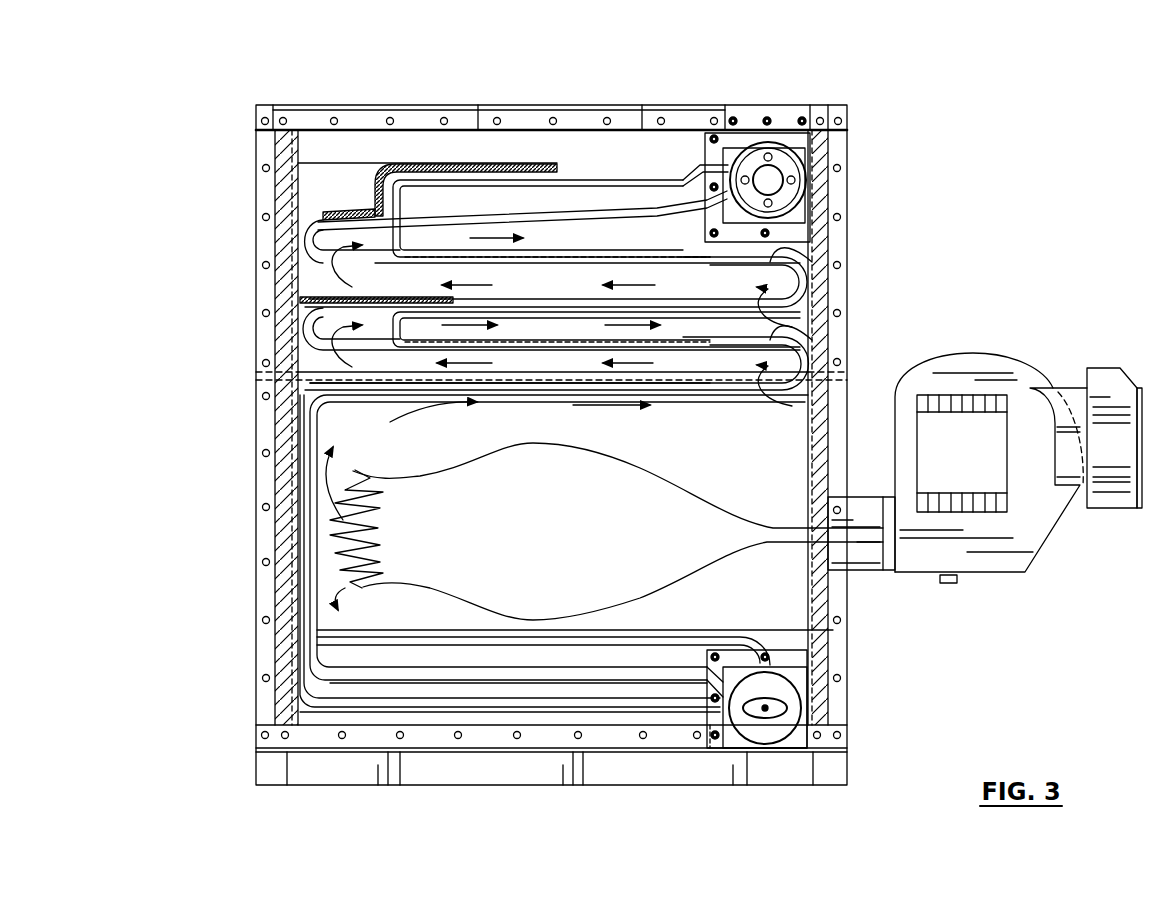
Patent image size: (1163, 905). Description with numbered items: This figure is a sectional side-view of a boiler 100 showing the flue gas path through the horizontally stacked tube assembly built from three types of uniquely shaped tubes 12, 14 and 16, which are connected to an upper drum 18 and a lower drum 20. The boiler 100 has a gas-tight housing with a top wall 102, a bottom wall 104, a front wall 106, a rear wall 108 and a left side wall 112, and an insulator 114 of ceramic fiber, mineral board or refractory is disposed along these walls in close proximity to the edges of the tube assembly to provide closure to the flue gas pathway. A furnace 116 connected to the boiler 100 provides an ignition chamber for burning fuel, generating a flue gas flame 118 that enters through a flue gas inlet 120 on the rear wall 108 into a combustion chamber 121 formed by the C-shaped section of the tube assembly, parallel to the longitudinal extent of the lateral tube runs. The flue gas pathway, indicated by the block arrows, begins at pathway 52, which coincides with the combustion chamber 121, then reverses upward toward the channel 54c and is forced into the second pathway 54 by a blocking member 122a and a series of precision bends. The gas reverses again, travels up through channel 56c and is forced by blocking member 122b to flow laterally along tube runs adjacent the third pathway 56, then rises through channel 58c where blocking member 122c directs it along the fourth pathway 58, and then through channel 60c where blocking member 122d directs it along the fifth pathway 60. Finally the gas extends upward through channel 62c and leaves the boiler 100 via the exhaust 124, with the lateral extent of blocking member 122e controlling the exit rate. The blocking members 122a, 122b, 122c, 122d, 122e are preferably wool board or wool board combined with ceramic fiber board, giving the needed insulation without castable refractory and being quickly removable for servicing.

The boiler 100 is at (893, 85).
The top wall 102 is at (350, 107).
The bottom wall 104 is at (485, 772).
The front wall 106 is at (265, 423).
The rear wall 108 is at (837, 350).
The left side wall 112 is at (407, 147).
The insulator 114 is at (275, 640).
The furnace 116 is at (978, 358).
The flue gas flame 118 is at (647, 463).
The flue gas inlet 120 is at (830, 535).
The combustion chamber 121 is at (737, 595).
The blocking member 122a is at (800, 333).
The blocking member 122b is at (298, 296).
The blocking member 122c is at (820, 265).
The blocking member 122d is at (325, 213).
The blocking member 122e is at (497, 165).
The exhaust 124 is at (673, 137).
The tube 12 is at (598, 668).
The tube 14 is at (615, 705).
The tube 16 is at (680, 637).
The upper drum 18 is at (772, 158).
The lower drum 20 is at (775, 735).
The pathway 52 is at (433, 448).
The second pathway 54 is at (510, 363).
The channel 54c is at (748, 362).
The third pathway 56 is at (545, 330).
The channel 56c is at (303, 320).
The fourth pathway 58 is at (530, 287).
The channel 58c is at (800, 278).
The fifth pathway 60 is at (577, 237).
The channel 60c is at (303, 237).
The channel 62c is at (610, 178).